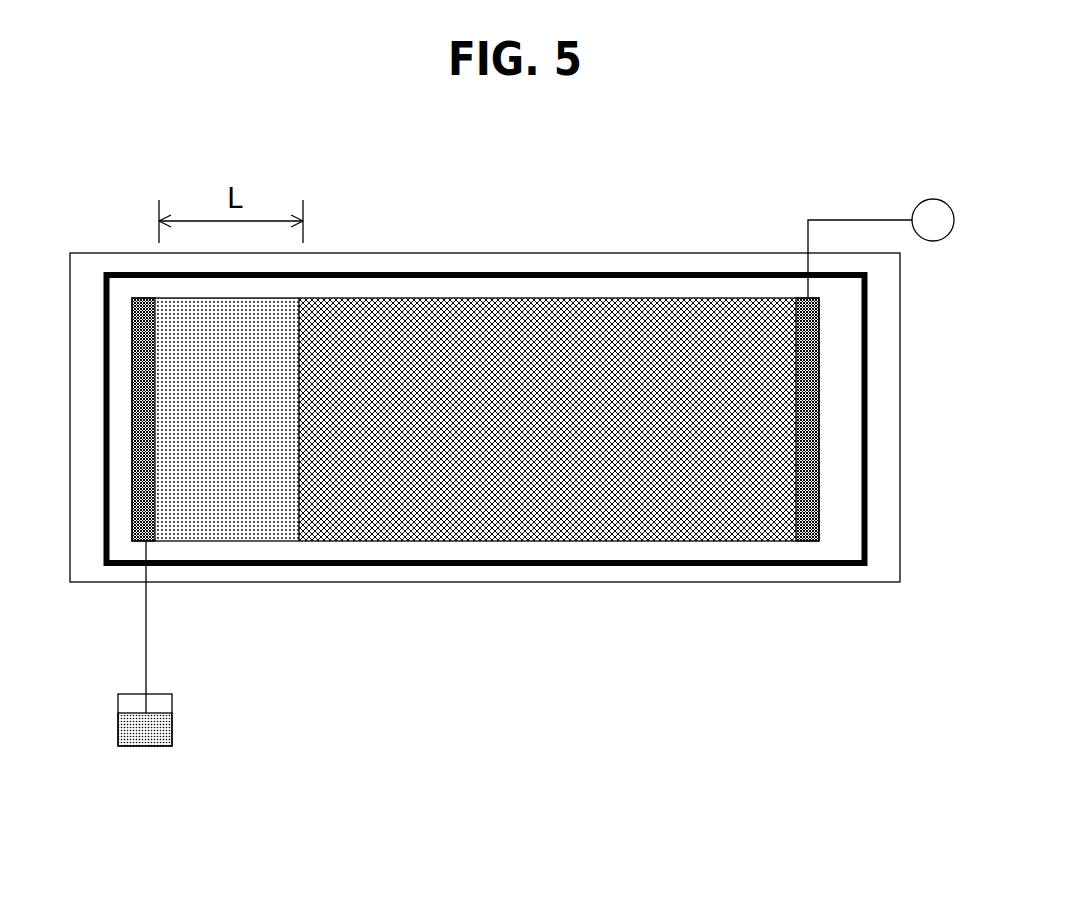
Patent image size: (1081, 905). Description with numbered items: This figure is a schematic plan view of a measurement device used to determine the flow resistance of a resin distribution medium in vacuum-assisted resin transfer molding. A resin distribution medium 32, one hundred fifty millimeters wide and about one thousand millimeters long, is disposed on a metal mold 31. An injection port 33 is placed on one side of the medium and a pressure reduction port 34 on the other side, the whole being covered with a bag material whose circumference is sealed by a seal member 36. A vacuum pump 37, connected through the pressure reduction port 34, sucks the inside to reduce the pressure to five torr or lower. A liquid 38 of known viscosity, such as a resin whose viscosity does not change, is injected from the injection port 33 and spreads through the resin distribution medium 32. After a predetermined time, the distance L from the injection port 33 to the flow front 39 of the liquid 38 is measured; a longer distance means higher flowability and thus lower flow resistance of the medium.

The metal mold 31 is at (658, 570).
The resin distribution medium 32 is at (453, 510).
The injection port 33 is at (157, 543).
The pressure reduction port 34 is at (812, 542).
The seal member 36 is at (863, 518).
The vacuum pump 37 is at (932, 200).
The liquid 38 is at (160, 735).
The flow front 39 is at (310, 370).